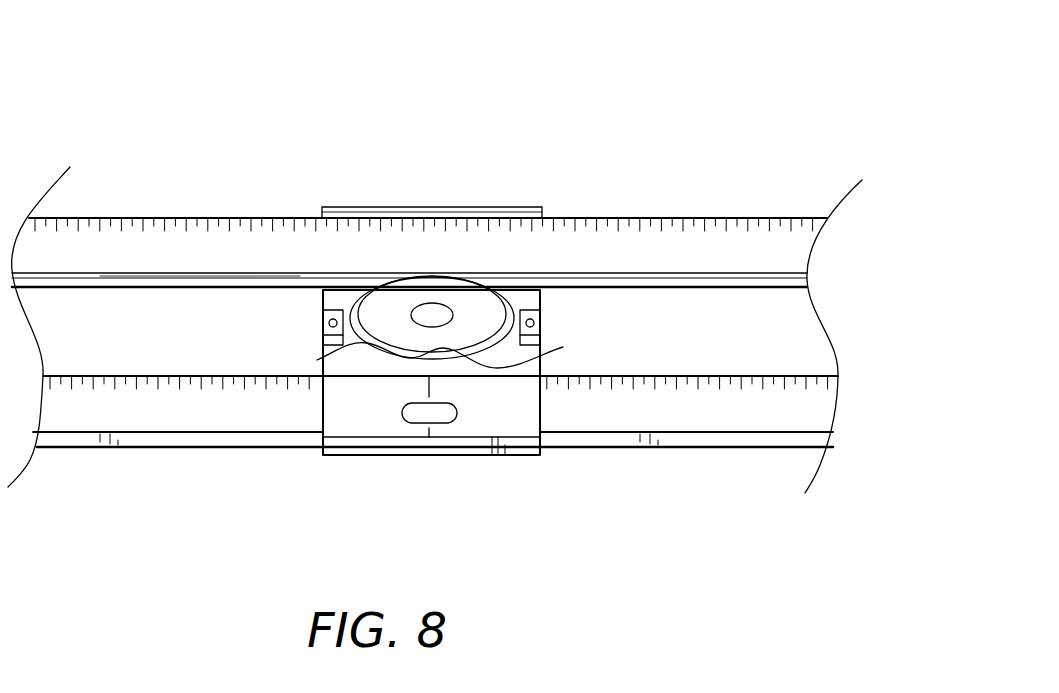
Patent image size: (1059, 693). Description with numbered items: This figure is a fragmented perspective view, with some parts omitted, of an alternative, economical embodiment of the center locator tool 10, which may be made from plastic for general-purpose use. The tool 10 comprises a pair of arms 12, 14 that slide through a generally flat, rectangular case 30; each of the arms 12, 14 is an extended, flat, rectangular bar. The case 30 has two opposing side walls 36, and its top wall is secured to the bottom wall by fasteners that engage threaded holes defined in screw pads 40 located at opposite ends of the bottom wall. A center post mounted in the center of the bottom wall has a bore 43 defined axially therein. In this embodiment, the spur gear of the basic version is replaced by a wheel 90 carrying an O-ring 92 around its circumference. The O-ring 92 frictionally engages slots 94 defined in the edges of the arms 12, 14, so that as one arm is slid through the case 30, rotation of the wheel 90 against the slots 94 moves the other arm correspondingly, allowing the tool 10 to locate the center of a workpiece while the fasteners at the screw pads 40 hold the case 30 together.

The center locator tool 10 is at (586, 111).
The arm 12 is at (253, 221).
The arm 14 is at (762, 448).
The case 30 is at (556, 302).
The side wall 36 is at (432, 455).
The screw pad 40 is at (325, 324).
The bore 43 is at (427, 312).
The wheel 90 is at (383, 280).
The O-ring 92 is at (493, 278).
The slot 94 is at (148, 286).